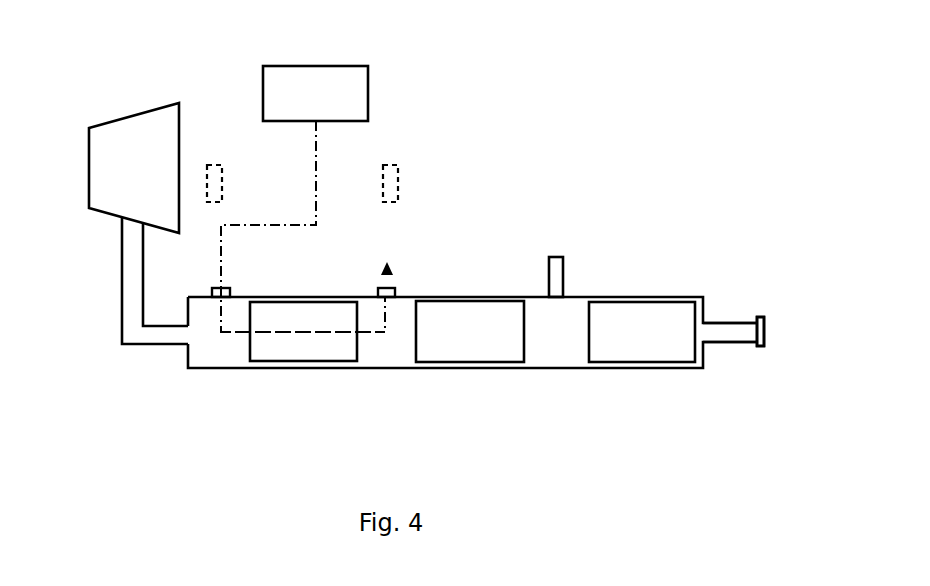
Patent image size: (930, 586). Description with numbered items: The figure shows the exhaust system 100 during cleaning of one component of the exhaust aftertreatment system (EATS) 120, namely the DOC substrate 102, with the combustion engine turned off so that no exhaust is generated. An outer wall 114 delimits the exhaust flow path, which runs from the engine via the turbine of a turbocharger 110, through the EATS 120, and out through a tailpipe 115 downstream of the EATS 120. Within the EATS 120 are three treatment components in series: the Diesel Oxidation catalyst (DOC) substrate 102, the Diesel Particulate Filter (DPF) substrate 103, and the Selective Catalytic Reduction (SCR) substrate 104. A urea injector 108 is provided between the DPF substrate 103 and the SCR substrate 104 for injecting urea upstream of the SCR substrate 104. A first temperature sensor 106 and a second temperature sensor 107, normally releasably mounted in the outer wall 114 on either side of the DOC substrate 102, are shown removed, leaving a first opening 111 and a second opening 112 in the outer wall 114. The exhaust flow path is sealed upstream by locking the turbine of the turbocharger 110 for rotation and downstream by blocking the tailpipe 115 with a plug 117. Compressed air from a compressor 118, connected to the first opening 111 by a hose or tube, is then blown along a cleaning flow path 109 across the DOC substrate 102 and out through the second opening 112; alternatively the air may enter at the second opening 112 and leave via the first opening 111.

The exhaust system 100 is at (120, 80).
The Diesel Oxidation catalyst (DOC) substrate 102 is at (328, 355).
The Diesel Particulate Filter (DPF) substrate 103 is at (493, 355).
The Selective Catalytic Reduction (SCR) substrate 104 is at (653, 355).
The first temperature sensor 106 is at (213, 163).
The second temperature sensor 107 is at (385, 163).
The urea injector 108 is at (555, 255).
The cleaning flow path 109 is at (270, 338).
The turbocharger 110 is at (112, 204).
The first opening 111 is at (213, 285).
The second opening 112 is at (378, 290).
The outer wall 114 is at (430, 295).
The tailpipe 115 is at (724, 320).
The plug 117 is at (764, 317).
The compressor 118 is at (313, 72).
The exhaust aftertreatment system (EATS) 120 is at (493, 220).